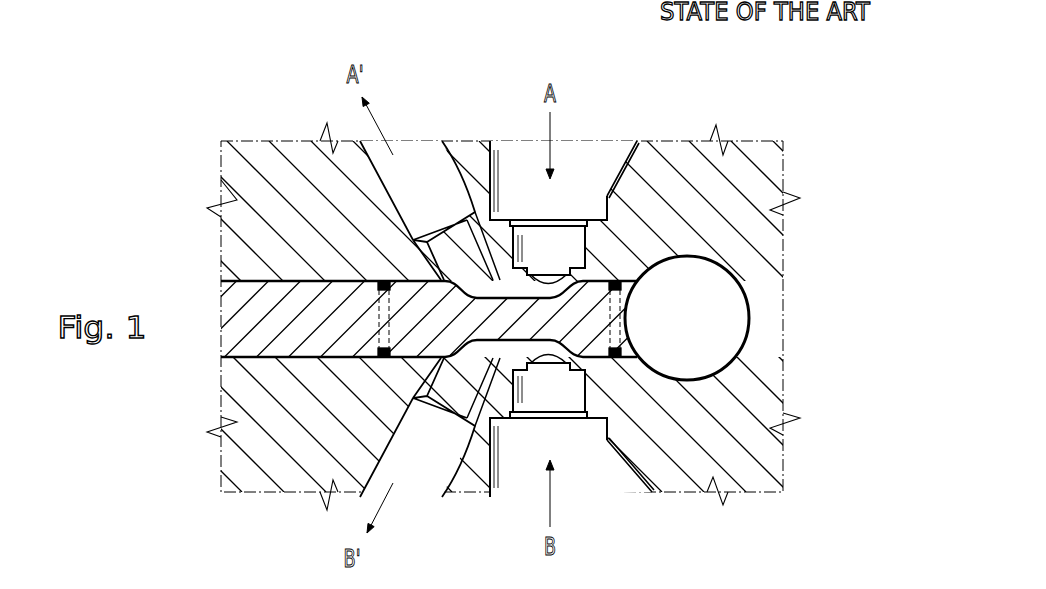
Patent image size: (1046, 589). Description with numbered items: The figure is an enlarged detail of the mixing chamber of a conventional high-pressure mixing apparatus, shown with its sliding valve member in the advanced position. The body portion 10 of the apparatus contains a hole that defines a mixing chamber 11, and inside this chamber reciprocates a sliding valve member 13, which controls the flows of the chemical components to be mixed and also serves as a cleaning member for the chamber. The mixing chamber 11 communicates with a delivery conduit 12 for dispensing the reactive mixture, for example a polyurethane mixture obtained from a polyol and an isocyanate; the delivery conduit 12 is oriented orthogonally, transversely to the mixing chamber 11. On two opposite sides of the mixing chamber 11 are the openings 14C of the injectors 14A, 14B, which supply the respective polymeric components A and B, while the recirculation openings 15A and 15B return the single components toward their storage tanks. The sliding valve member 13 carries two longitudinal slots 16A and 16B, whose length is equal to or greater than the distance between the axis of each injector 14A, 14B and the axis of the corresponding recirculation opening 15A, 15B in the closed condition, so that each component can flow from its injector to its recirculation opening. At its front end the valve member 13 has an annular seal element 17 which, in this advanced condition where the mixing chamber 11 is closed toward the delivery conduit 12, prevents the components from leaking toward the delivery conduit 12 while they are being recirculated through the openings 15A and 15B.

The body portion 10 is at (753, 180).
The mixing chamber 11 is at (622, 282).
The delivery conduit 12 is at (720, 312).
The sliding valve member 13 is at (413, 340).
The injector 14A is at (550, 272).
The injector 14B is at (550, 366).
The openings of the injectors 14C is at (637, 141).
The recirculation opening 15A is at (473, 275).
The recirculation opening 15B is at (473, 363).
The longitudinal slot 16A is at (445, 178).
The longitudinal slot 16B is at (445, 460).
The annular seal element 17 is at (620, 363).